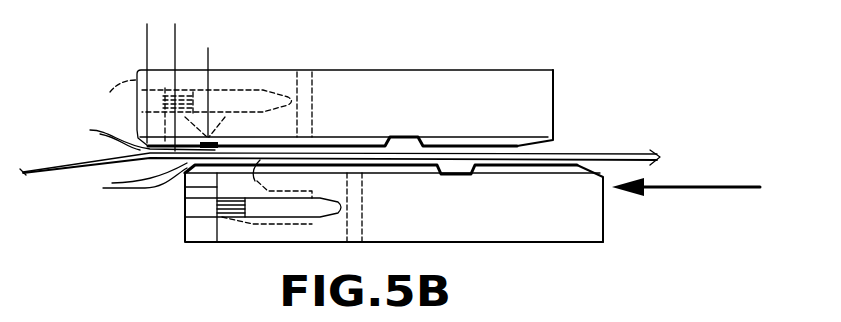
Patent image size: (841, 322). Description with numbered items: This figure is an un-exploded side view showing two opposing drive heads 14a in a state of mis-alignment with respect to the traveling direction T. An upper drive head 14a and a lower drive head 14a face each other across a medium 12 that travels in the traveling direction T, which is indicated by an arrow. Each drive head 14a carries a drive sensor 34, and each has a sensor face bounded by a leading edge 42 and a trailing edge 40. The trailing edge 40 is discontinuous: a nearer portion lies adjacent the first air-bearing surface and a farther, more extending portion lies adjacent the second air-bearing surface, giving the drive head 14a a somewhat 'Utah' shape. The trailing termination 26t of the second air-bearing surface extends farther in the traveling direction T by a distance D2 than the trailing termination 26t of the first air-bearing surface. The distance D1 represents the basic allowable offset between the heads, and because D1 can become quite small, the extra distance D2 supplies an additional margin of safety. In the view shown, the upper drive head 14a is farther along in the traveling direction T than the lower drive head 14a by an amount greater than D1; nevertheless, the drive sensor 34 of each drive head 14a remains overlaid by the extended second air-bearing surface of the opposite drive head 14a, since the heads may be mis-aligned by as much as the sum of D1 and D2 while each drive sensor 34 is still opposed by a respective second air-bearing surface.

The tape 12 is at (633, 153).
The drive head 14a is at (488, 84).
The trailing termination 26t is at (132, 158).
The drive sensor 34 is at (255, 141).
The trailing edge 40 is at (185, 230).
The leading edge 42 is at (555, 99).
The distance D1 is at (154, 53).
The distance D2 is at (124, 34).
The traveling direction T is at (686, 202).